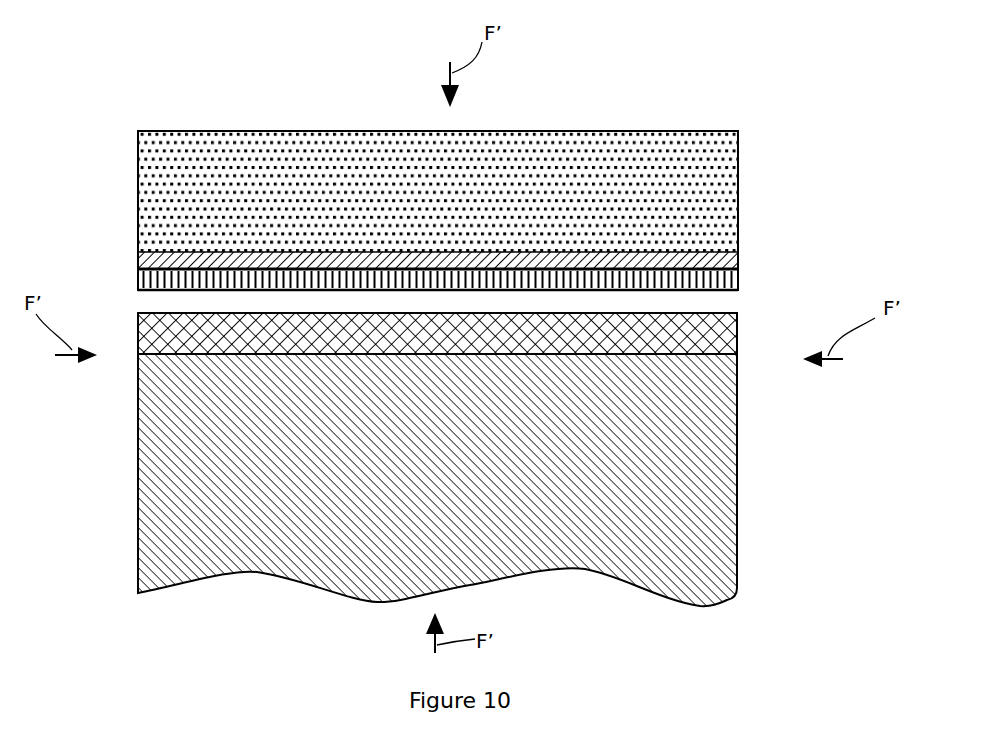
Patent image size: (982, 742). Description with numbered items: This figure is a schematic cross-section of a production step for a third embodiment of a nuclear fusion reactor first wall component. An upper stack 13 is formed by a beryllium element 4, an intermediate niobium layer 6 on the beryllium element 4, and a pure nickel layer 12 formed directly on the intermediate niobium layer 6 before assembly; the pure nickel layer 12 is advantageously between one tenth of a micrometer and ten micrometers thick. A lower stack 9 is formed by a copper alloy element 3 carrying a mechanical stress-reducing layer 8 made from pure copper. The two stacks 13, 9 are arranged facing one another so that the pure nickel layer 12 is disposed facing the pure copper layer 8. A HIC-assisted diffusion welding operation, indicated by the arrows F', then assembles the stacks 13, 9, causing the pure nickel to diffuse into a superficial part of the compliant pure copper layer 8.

The copper alloy element 3 is at (187, 528).
The beryllium element 4 is at (682, 190).
The intermediate niobium layer 6 is at (138, 254).
The mechanical stress-reducing layer 8 is at (702, 355).
The stack 9 is at (457, 463).
The pure nickel layer 12 is at (688, 290).
The stack 13 is at (427, 211).